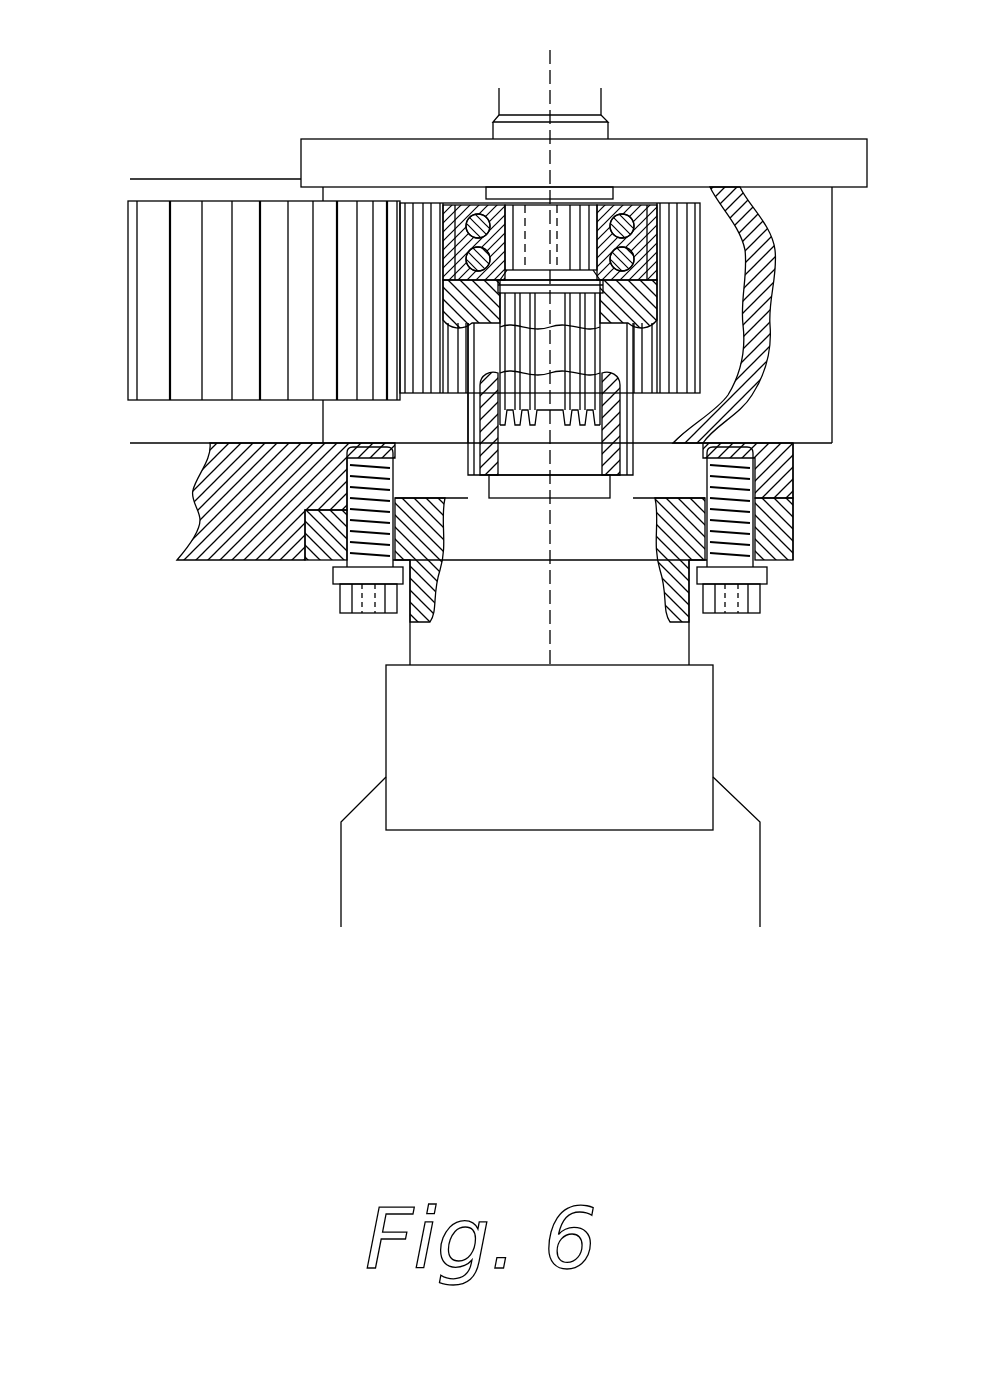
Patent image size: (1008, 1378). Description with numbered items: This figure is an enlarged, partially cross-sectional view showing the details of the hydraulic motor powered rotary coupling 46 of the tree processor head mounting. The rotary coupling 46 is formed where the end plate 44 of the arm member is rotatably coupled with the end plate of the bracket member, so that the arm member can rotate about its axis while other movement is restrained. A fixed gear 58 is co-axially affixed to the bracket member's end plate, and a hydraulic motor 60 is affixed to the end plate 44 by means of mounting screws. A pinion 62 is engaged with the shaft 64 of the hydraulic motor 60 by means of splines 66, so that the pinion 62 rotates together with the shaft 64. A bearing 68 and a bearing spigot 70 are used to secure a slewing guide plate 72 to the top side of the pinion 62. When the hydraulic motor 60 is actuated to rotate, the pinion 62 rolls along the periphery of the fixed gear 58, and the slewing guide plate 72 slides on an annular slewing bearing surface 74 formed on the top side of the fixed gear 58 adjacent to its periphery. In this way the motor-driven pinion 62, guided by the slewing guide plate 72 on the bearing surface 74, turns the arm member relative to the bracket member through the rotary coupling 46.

The end plate 44 is at (253, 537).
The rotary coupling 46 is at (297, 675).
The fixed gear 58 is at (213, 278).
The hydraulic motor 60 is at (615, 760).
The pinion 62 is at (683, 352).
The shaft 64 is at (580, 455).
The splines 66 is at (565, 395).
The bearing 68 is at (650, 248).
The bearing spigot 70 is at (590, 130).
The slewing guide plate 72 is at (340, 139).
The annular slewing bearing surface 74 is at (197, 179).